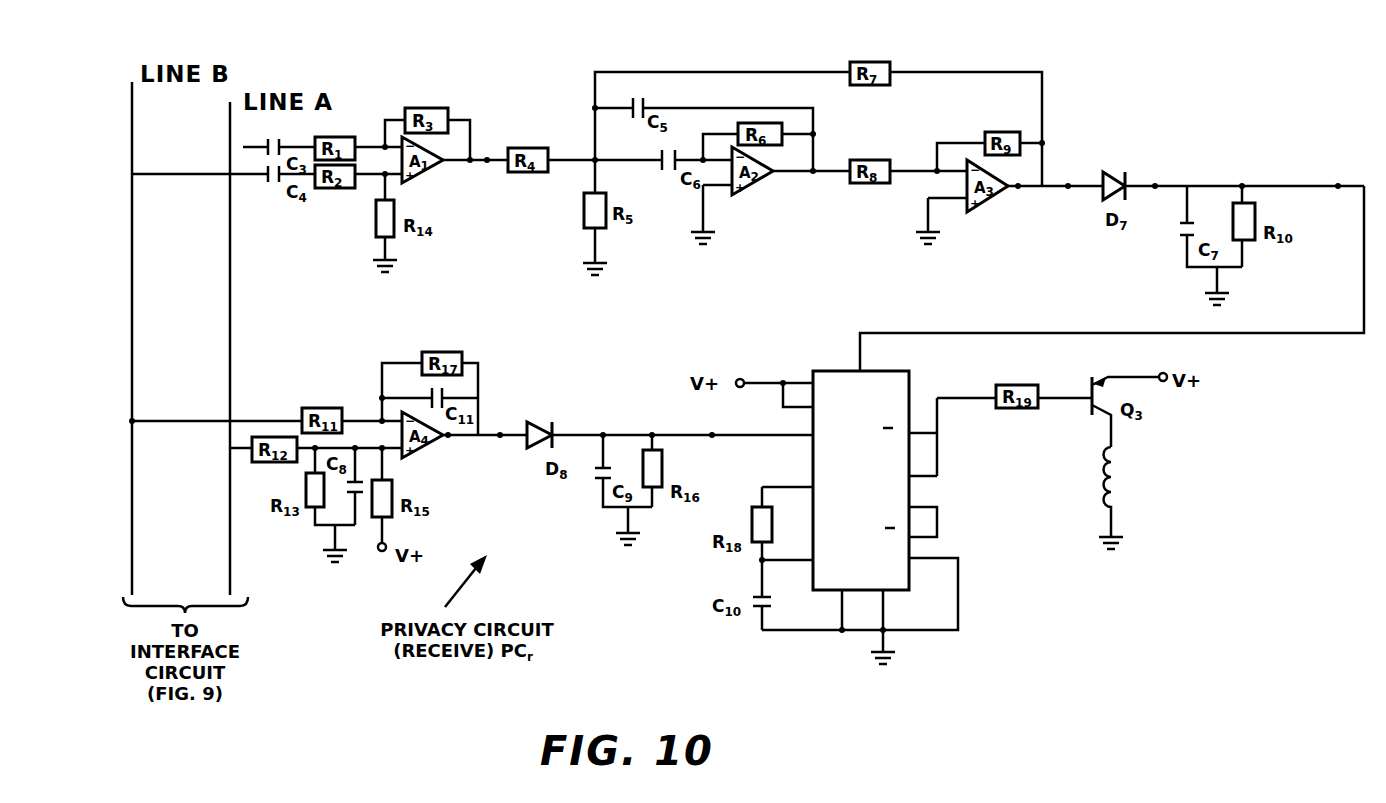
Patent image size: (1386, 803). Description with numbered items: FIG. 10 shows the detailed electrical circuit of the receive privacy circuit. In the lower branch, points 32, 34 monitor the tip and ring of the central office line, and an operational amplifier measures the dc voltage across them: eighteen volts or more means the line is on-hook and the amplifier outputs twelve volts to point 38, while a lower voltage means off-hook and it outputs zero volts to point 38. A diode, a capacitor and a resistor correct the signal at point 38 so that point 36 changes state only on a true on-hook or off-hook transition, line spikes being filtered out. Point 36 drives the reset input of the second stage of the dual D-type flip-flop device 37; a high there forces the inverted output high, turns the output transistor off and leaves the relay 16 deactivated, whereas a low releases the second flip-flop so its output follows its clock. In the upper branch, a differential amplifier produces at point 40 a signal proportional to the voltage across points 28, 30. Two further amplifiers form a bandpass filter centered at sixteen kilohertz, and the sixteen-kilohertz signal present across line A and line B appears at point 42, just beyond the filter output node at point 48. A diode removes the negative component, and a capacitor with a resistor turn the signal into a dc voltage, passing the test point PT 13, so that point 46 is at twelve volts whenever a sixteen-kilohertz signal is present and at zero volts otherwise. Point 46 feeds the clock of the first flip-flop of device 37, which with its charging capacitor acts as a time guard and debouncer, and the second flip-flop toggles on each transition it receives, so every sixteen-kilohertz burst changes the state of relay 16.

The point 28 is at (243, 147).
The point 30 is at (243, 174).
The point 32 is at (132, 421).
The point 34 is at (230, 448).
The point 36 is at (712, 437).
The dual D-type (4013) flip-flop device 37 is at (815, 592).
The point 38 is at (500, 437).
The point 40 is at (470, 162).
The point 42 is at (1085, 186).
The point 46 is at (1338, 186).
The amplifier A3 output node 48 is at (1042, 188).
The test point PT13 13 is at (1163, 167).
The relay 16 is at (1118, 490).